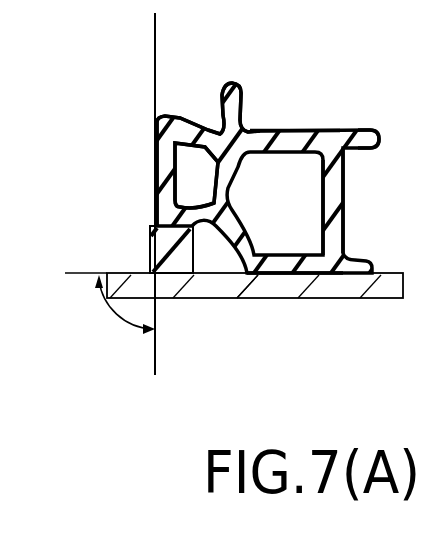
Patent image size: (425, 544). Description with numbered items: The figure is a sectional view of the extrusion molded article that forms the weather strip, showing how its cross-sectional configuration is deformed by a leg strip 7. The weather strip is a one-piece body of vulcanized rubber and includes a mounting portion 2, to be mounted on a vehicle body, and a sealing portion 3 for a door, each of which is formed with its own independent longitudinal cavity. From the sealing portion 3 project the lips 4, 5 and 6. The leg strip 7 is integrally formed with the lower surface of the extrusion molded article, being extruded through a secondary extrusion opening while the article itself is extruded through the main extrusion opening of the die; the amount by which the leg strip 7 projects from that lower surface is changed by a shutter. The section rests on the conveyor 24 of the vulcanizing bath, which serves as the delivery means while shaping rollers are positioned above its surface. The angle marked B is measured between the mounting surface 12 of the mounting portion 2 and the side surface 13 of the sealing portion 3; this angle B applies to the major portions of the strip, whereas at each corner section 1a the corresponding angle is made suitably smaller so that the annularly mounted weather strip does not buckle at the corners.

The corner section 1a is at (272, 127).
The mounting portion 2 is at (173, 207).
The sealing portion 3 is at (337, 208).
The lip 4 is at (358, 268).
The lip 5 is at (375, 138).
The lip 6 is at (228, 88).
The leg strip 7 is at (190, 257).
The mounting surface 12 is at (153, 165).
The side surface 13 is at (305, 275).
The conveyor 24 is at (257, 277).
The angle B is at (117, 322).